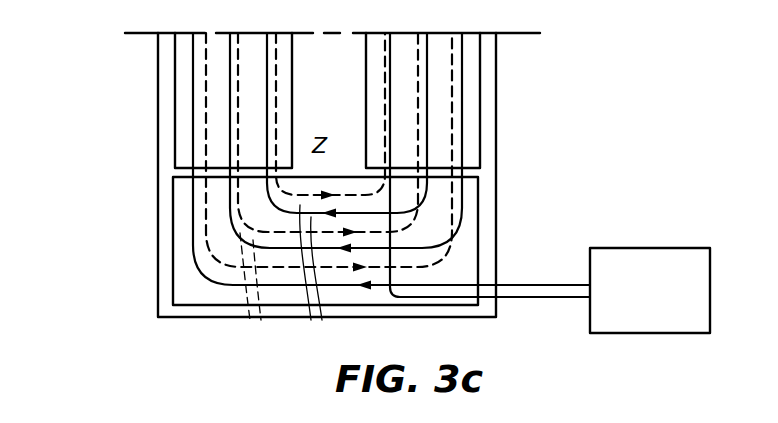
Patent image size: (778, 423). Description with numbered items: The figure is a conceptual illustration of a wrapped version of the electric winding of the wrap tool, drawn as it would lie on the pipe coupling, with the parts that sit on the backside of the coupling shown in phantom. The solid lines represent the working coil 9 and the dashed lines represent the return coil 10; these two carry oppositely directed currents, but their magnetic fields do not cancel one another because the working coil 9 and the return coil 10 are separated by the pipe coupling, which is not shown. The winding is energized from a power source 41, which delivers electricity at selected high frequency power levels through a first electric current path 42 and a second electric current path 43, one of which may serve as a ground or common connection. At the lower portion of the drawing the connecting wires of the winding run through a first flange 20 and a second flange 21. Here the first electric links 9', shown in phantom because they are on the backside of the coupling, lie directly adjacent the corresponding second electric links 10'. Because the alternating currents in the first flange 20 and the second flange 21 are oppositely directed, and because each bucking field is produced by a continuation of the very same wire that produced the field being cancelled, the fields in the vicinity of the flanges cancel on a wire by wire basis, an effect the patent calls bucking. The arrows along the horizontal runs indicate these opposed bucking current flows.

The working coil 9 is at (462, 100).
The return coil 10 is at (184, 100).
The first flange 20 is at (252, 241).
The second flange 21 is at (173, 262).
The first electric links 9' is at (212, 298).
The second electric links 10' is at (280, 284).
The power source 41 is at (666, 248).
The first electric current path 42 is at (548, 285).
The second electric current path 43 is at (557, 298).